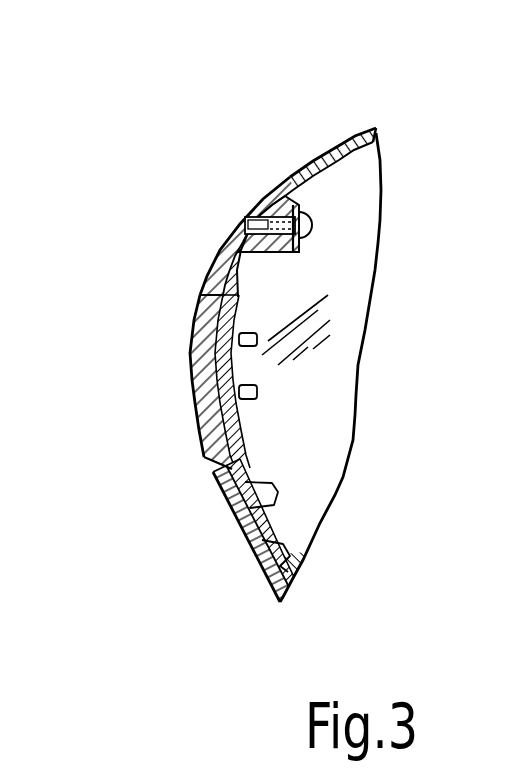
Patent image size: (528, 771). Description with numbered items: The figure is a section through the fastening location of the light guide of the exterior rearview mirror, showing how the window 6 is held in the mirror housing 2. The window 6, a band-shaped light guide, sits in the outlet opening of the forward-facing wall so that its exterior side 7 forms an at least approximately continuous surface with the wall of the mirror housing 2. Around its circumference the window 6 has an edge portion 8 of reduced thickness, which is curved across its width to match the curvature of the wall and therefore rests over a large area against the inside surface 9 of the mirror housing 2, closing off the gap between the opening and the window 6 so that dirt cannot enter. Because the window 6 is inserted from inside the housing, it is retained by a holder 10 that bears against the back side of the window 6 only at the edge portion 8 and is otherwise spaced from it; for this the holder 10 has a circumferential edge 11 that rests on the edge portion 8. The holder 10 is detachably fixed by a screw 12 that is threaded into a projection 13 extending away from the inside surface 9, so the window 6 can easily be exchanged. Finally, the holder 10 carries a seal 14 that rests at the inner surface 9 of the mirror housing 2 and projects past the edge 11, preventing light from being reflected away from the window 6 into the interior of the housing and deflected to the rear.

The mirror housing 2 is at (324, 156).
The window 6 is at (205, 352).
The exterior side 7 is at (210, 398).
The edge portion 8 is at (245, 537).
The inside surface 9 is at (347, 152).
The holder 10 is at (243, 427).
The edge 11 is at (225, 243).
The screw 12 is at (282, 210).
The projection 13 is at (290, 195).
The seal 14 is at (280, 545).